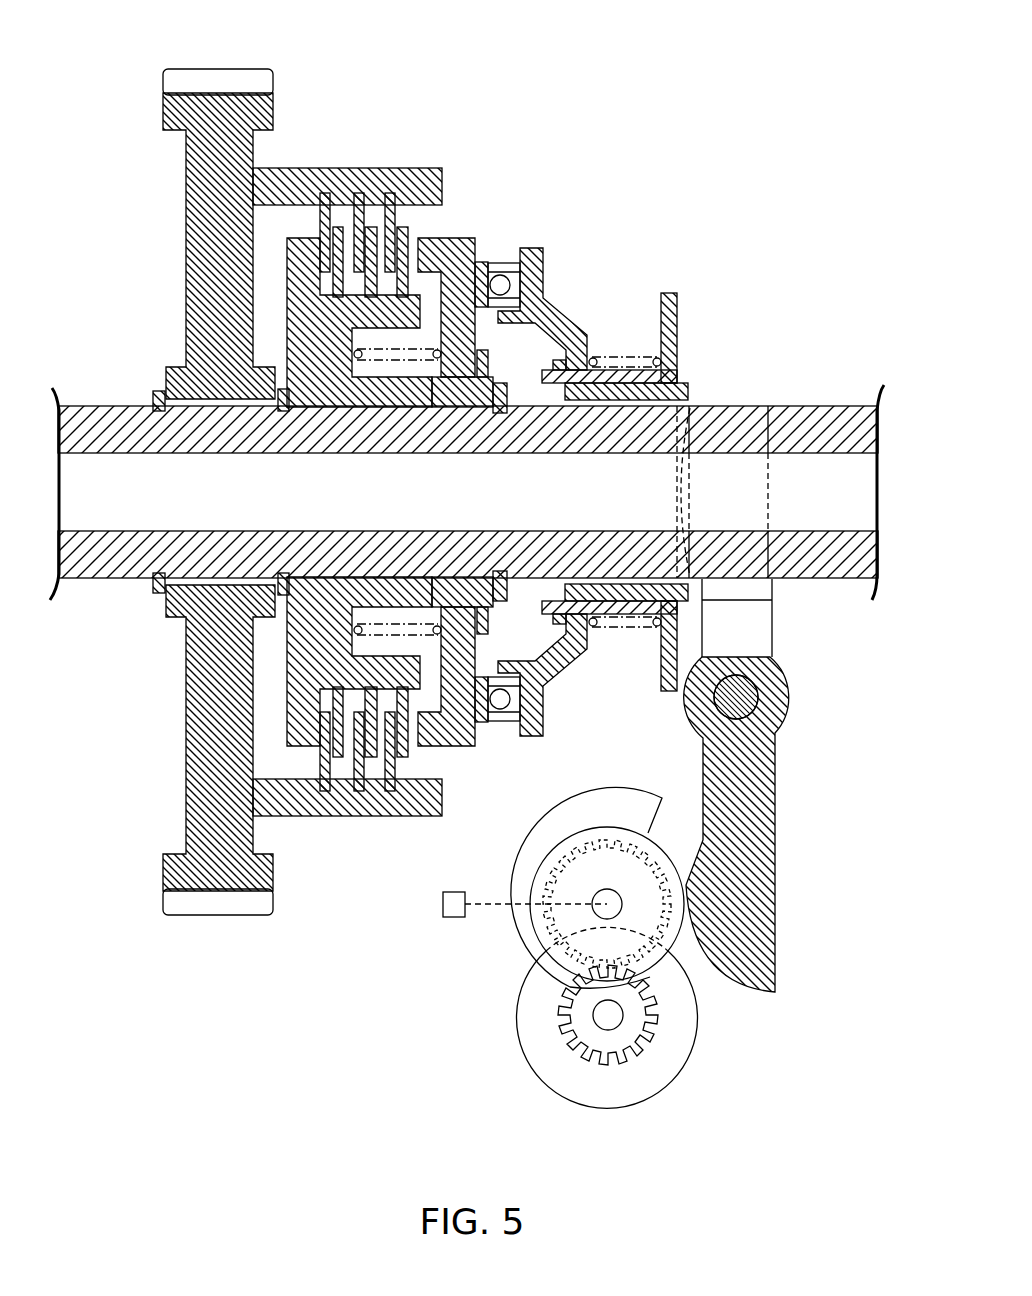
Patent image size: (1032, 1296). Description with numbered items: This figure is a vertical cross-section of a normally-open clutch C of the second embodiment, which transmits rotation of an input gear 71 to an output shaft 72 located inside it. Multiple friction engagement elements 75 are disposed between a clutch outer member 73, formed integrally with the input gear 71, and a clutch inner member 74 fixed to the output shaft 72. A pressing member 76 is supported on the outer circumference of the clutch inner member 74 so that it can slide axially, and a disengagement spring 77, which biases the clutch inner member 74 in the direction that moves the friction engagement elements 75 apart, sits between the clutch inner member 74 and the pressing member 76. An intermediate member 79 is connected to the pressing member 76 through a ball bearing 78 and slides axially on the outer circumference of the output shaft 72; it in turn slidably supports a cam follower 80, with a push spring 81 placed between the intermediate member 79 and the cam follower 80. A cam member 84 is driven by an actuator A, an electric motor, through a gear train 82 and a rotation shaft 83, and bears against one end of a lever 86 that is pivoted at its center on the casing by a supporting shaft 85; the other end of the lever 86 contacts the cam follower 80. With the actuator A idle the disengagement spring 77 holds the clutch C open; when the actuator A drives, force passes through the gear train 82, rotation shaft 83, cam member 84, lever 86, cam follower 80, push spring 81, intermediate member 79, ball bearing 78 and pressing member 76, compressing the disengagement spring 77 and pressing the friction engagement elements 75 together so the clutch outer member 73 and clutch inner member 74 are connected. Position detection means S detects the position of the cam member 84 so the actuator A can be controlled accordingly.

The input gear 71 is at (236, 77).
The output shaft 72 is at (98, 408).
The clutch outer member 73 is at (289, 185).
The clutch inner member 74 is at (330, 402).
The friction engagement elements 75 is at (376, 226).
The pressing member 76 is at (452, 238).
The disengagement spring 77 is at (456, 382).
The ball bearing 78 is at (512, 283).
The intermediate member 79 is at (570, 318).
The cam follower 80 is at (678, 323).
The push spring 81 is at (650, 358).
The gear train 82 is at (660, 985).
The rotation shaft 83 is at (597, 912).
The cam member 84 is at (605, 797).
The supporting shaft 85 is at (753, 707).
The lever 86 is at (752, 818).
The actuator A is at (548, 1073).
The position detection means S is at (441, 901).
The clutch C is at (430, 112).